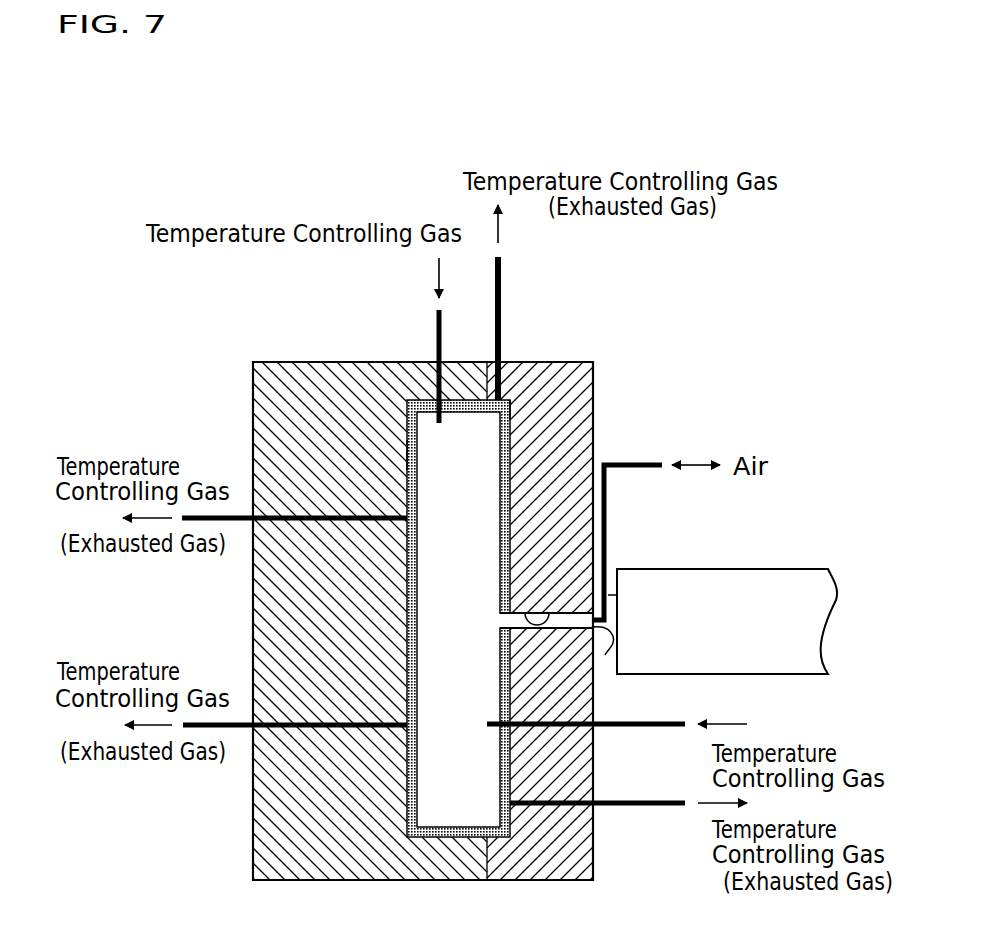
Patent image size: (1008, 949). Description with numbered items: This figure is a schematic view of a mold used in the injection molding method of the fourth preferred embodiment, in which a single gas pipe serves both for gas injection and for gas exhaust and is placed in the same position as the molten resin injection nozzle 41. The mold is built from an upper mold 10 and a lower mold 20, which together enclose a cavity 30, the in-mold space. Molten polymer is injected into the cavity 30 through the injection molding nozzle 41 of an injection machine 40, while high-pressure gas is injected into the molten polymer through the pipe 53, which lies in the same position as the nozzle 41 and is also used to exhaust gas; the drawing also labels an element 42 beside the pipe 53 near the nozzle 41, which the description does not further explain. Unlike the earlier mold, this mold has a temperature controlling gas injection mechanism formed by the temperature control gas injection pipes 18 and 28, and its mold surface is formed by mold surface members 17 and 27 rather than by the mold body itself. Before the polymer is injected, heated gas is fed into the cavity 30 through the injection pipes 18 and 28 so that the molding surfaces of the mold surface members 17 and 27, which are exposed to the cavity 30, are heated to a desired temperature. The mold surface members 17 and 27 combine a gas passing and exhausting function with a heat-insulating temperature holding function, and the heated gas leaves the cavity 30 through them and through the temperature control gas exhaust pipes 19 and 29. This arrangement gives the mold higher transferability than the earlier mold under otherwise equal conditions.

The upper mold 10 is at (563, 860).
The mold surface member 17 is at (510, 420).
The temperature control gas injection pipe 18 is at (632, 727).
The temperature control gas exhaust pipe 19 is at (501, 310).
The lower mold 20 is at (272, 853).
The mold surface member 27 is at (407, 455).
The temperature control gas injection pipe 28 is at (436, 340).
The temperature control gas exhaust pipe 29 is at (243, 525).
The cavity 30 is at (464, 713).
The injection machine 40 is at (744, 635).
The molten resin injection nozzle 41 is at (605, 655).
The slot / opening 42 is at (548, 613).
The pipe 53 is at (628, 463).